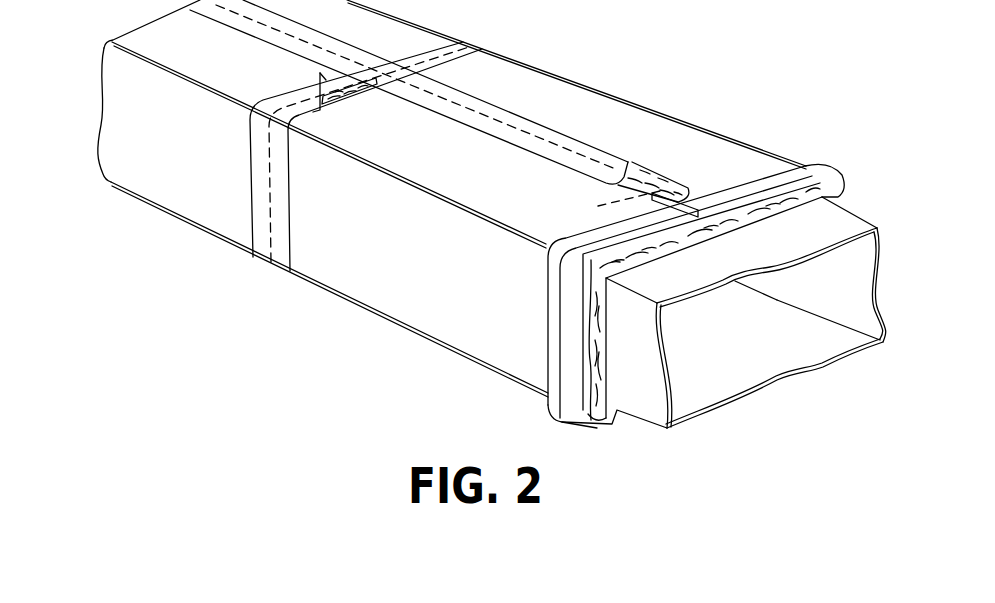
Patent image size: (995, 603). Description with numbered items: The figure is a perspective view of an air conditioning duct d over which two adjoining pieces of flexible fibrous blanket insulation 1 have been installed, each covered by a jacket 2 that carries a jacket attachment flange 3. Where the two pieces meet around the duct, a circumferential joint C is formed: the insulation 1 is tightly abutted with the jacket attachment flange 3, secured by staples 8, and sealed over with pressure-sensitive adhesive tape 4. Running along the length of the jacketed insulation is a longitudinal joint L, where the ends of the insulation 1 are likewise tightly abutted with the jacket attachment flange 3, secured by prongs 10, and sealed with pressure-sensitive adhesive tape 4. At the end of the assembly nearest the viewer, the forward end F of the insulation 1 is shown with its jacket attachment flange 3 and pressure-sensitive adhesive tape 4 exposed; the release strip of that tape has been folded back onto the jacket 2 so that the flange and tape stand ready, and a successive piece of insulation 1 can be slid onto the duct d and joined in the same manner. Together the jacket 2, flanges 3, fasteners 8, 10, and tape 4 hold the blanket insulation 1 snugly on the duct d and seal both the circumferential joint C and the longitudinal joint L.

The flexible fibrous blanket insulation 1 is at (836, 195).
The jacket 2 is at (605, 119).
The jacket attachment flange 3 is at (334, 92).
The pressure-sensitive adhesive tape 4 is at (285, 100).
The staples 8 is at (320, 73).
The prongs 10 is at (627, 206).
The longitudinal joint L is at (504, 101).
The circumferential joint C is at (234, 184).
The forward end F is at (611, 418).
The duct d is at (737, 388).